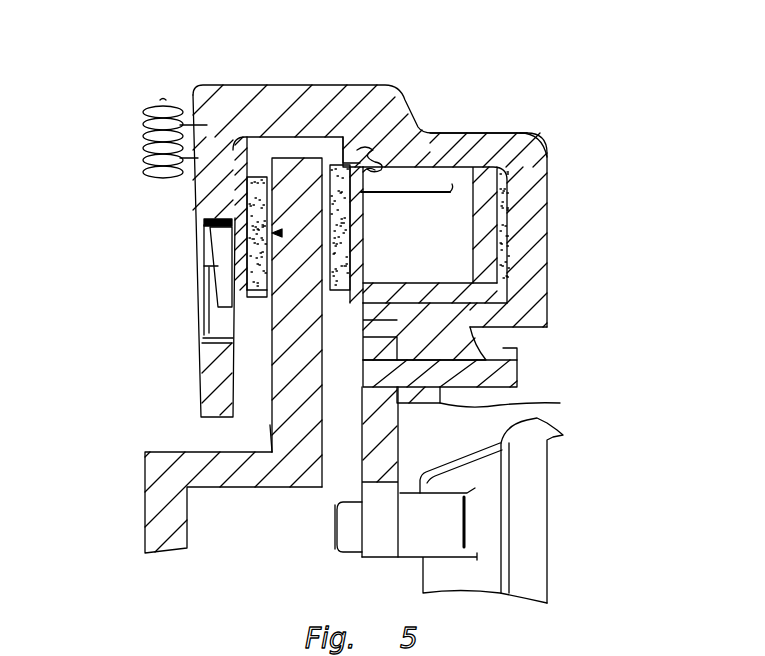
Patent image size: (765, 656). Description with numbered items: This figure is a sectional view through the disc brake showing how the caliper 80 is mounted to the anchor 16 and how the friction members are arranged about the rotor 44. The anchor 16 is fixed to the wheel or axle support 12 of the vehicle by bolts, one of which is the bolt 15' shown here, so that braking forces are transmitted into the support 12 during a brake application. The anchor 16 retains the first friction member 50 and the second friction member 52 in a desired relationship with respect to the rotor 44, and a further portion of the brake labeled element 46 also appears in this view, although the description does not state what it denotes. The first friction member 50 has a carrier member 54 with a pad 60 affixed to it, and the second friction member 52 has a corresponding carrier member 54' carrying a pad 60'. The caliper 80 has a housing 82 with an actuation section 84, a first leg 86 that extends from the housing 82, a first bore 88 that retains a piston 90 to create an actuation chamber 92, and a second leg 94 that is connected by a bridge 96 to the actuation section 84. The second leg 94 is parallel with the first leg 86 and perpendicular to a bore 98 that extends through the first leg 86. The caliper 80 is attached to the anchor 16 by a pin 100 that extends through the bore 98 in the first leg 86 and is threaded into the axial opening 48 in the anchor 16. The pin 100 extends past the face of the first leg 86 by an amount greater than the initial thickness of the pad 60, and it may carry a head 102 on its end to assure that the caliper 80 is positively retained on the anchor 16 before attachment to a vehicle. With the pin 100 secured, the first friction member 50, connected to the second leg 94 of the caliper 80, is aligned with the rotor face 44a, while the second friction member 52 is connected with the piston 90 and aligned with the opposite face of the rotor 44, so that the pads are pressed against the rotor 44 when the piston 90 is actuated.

The wheel or axle support 12 is at (533, 513).
The bolt 15' is at (319, 529).
The anchor 16 is at (400, 431).
The rotor 44 is at (155, 508).
The rotor face 44a is at (272, 422).
The shaft 46 is at (328, 438).
The axial opening 48 is at (365, 315).
The first friction member 50 is at (257, 165).
The second friction member 52 is at (344, 140).
The carrier member 54 is at (181, 265).
The carrier member 54' is at (407, 209).
The pad 60 is at (256, 317).
The pad 60' is at (397, 86).
The caliper 80 is at (558, 112).
The housing 82 is at (393, 113).
The actuation section 84 is at (541, 181).
The first leg 86 is at (545, 326).
The first bore 88 is at (515, 130).
The piston 90 is at (477, 152).
The actuation chamber 92 is at (547, 147).
The second leg 94 is at (197, 180).
The bridge 96 is at (312, 103).
The bore 98 is at (480, 402).
The pin 100 is at (520, 383).
The head 102 is at (520, 330).